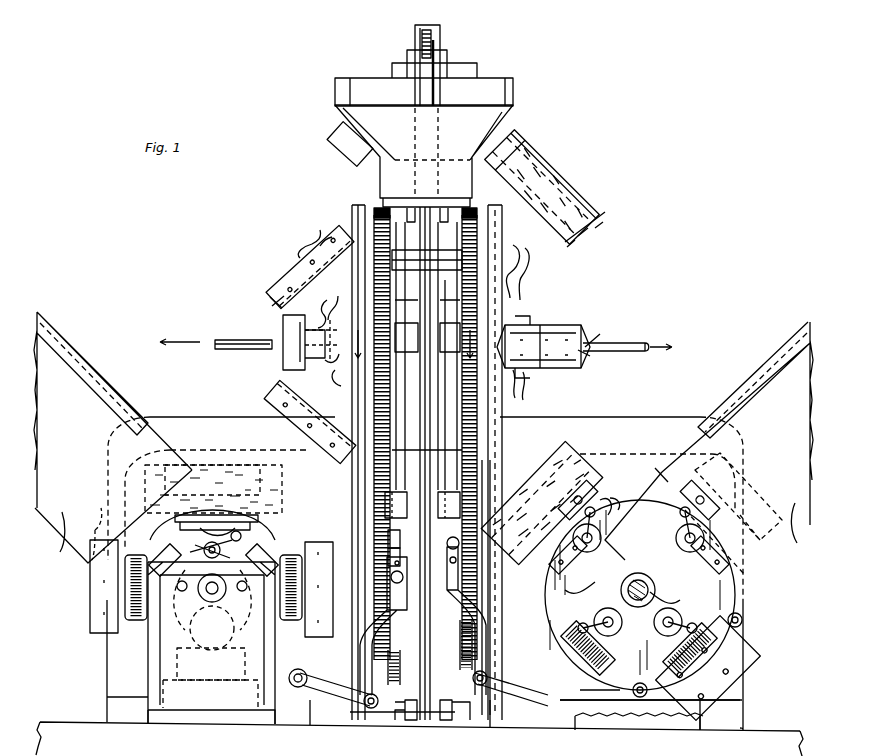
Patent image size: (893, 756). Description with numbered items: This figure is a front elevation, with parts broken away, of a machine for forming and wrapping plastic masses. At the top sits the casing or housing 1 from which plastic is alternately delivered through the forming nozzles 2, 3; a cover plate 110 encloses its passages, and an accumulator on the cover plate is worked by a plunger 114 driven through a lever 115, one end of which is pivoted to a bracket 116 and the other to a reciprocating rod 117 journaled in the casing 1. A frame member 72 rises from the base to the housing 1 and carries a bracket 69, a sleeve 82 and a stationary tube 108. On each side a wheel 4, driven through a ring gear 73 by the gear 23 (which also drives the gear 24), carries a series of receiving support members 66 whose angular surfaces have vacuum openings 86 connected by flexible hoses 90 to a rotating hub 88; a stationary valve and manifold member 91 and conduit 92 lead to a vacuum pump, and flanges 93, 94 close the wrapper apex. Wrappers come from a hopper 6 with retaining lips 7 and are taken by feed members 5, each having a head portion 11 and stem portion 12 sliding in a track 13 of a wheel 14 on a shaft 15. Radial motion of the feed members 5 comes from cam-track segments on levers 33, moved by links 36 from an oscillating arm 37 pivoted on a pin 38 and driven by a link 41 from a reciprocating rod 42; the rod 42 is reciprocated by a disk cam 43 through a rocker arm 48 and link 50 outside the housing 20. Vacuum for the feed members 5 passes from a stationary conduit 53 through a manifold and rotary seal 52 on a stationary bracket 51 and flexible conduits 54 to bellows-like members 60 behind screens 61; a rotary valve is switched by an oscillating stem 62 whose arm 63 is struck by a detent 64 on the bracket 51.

The casing or housing 1 is at (382, 179).
The forming nozzle 2 is at (520, 127).
The forming nozzle 3 is at (330, 130).
The wheel 4 is at (352, 212).
The wrapper feeding member 5 is at (83, 611).
The container or hopper 6 is at (790, 352).
The retaining lip 7 is at (170, 440).
The head portion 11 is at (216, 466).
The stem portion 12 is at (176, 518).
The track or groove 13 is at (612, 560).
The wheel 14 is at (278, 517).
The shaft 15 is at (628, 584).
The housing 20 is at (190, 417).
The gear 23 is at (388, 556).
The gear 24 is at (388, 568).
The lever 33 is at (740, 612).
The link 36 is at (655, 700).
The oscillating arm 37 is at (330, 690).
The pin 38 is at (298, 668).
The link 41 is at (372, 630).
The reciprocating rod 42 is at (374, 397).
The disk cam member 43 is at (238, 538).
The rocker arm 48 is at (460, 680).
The link 50 is at (390, 676).
The stationary bracket 51 is at (148, 664).
The vacuum manifold and rotary seal 52 is at (190, 632).
The stationary conduit 53 is at (222, 595).
The flexible conduit 54 is at (615, 510).
The bellows-like member 60 is at (140, 618).
The foraminous or screen element 61 is at (128, 600).
The oscillating stem 62 is at (225, 556).
The arm 63 is at (604, 525).
The detent 64 is at (188, 600).
The receiving support member 66 is at (292, 255).
The bracket 69 is at (440, 338).
The frame member 72 is at (425, 240).
The ring gear 73 is at (382, 206).
The sleeve 82 is at (385, 492).
The opening 86 is at (325, 240).
The rotating hub portion 88 is at (300, 330).
The flexible hose member 90 is at (335, 296).
The stationary valve and manifold member 91 is at (285, 352).
The conduit 92 is at (236, 340).
The flange portion 93 is at (270, 303).
The flange portion 94 is at (268, 292).
The stationary tube 108 is at (492, 466).
The cover plate 110 is at (500, 90).
The plunger 114 is at (440, 27).
The lever 115 is at (420, 30).
The bracket 116 is at (448, 57).
The reciprocating rod 117 is at (435, 93).